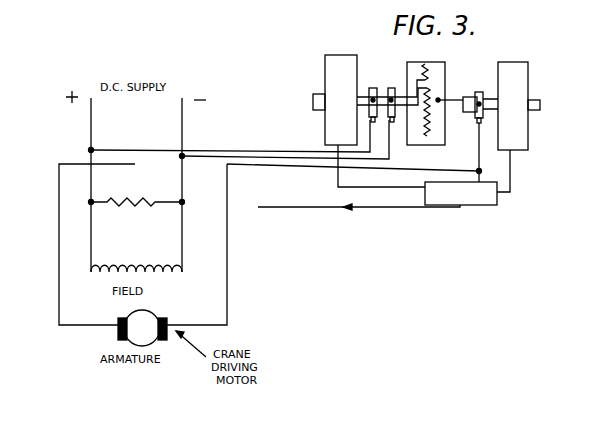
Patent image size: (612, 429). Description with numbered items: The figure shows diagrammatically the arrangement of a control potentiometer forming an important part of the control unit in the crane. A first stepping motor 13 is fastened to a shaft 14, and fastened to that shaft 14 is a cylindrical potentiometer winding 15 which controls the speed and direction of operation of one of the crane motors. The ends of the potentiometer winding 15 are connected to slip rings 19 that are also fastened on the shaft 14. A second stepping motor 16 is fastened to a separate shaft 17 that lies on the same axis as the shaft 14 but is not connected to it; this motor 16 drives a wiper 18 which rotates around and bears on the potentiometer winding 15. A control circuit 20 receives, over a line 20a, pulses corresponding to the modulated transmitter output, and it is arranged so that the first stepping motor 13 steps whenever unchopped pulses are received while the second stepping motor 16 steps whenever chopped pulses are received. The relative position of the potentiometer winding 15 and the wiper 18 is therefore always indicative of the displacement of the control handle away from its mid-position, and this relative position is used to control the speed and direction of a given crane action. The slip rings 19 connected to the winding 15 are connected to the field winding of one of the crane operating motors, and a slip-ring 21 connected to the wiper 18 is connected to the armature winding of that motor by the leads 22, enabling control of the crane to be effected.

The first stepping motor 13 is at (346, 113).
The shaft 14 is at (362, 97).
The potentiometer winding 15 is at (417, 68).
The second stepping motor 16 is at (521, 116).
The shaft 17 is at (486, 149).
The wiper 18 is at (457, 97).
The slip rings 19 is at (393, 87).
The control circuit 20 is at (472, 203).
The line 20a is at (280, 204).
The slip-ring 21 is at (481, 91).
The leads 22 is at (285, 160).